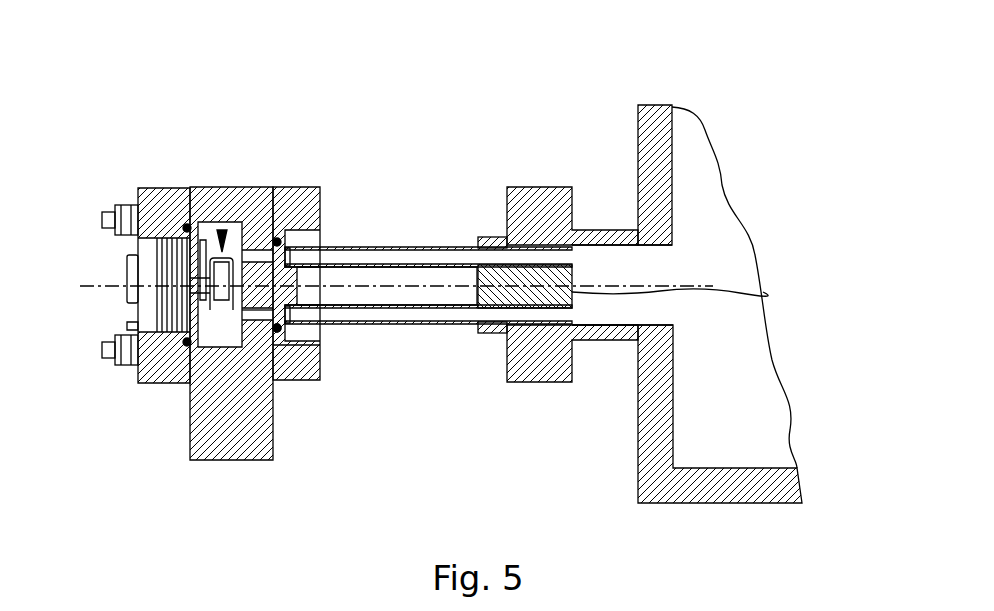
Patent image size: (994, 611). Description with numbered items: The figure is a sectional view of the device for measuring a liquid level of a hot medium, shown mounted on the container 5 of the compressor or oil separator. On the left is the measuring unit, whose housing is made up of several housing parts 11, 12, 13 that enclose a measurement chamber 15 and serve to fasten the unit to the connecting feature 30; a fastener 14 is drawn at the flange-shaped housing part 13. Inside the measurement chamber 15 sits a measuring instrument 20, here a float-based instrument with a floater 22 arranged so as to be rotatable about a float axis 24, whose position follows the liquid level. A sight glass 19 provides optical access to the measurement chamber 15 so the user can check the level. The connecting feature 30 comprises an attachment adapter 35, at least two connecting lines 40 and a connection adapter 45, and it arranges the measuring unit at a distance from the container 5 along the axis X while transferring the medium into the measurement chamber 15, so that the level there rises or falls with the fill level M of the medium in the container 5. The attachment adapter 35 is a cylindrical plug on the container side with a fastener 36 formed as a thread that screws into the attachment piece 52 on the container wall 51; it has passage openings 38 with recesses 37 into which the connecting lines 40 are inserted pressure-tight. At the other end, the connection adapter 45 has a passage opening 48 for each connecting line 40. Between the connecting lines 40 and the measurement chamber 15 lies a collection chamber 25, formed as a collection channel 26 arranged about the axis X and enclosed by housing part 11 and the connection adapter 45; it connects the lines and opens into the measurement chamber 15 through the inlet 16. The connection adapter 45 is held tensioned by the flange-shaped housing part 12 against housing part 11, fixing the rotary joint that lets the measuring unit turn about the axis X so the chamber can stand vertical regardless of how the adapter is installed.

The housing part 11 is at (250, 415).
The housing part 12 is at (255, 315).
The housing part 13 is at (146, 384).
The fastener 14 is at (120, 203).
The measurement chamber 15 is at (206, 235).
The inlet 16 is at (277, 380).
The sight glass 19 is at (165, 292).
The measuring instrument 20 is at (223, 230).
The floater 22 is at (250, 218).
The float axis 24 is at (187, 224).
The collection chamber 25 is at (280, 330).
The collection channel 26 is at (280, 330).
The connecting feature 30 is at (391, 152).
The attachment adapter 35 is at (497, 237).
The fastener 36 is at (555, 238).
The recess 37 is at (490, 238).
The passage opening 38 is at (530, 327).
The connecting lines 40 is at (388, 253).
The connection adapter 45 is at (288, 190).
The passage opening 48 is at (290, 258).
The wall 51 is at (655, 133).
The attachment piece 52 is at (547, 353).
The axis X is at (437, 287).
The fill level M is at (747, 292).
The container 5 is at (792, 115).